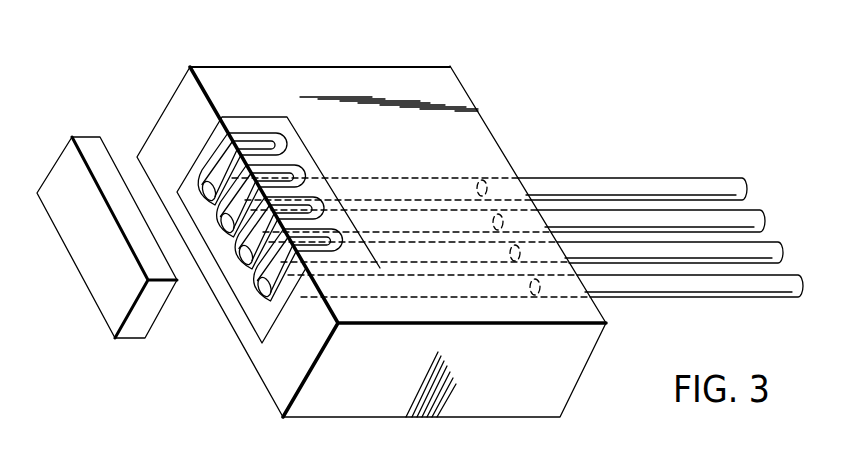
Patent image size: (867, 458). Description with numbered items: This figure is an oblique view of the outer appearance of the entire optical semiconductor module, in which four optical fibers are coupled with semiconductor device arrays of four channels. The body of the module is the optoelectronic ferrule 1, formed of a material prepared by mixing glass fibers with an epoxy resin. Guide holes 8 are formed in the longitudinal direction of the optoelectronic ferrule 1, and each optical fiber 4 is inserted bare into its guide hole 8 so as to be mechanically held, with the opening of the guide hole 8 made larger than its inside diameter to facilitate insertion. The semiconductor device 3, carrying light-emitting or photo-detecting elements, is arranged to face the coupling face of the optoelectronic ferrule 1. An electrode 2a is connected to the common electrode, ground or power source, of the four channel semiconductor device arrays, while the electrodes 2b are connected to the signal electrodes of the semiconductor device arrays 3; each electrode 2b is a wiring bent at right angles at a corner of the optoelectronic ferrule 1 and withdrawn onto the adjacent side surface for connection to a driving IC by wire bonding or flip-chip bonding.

The optoelectronic ferrule 1 is at (365, 78).
The electrode 2a is at (207, 147).
The electrode 2b is at (236, 140).
The semiconductor device 3 is at (93, 283).
The optical fiber 4 is at (655, 283).
The guide hole 8 is at (257, 298).